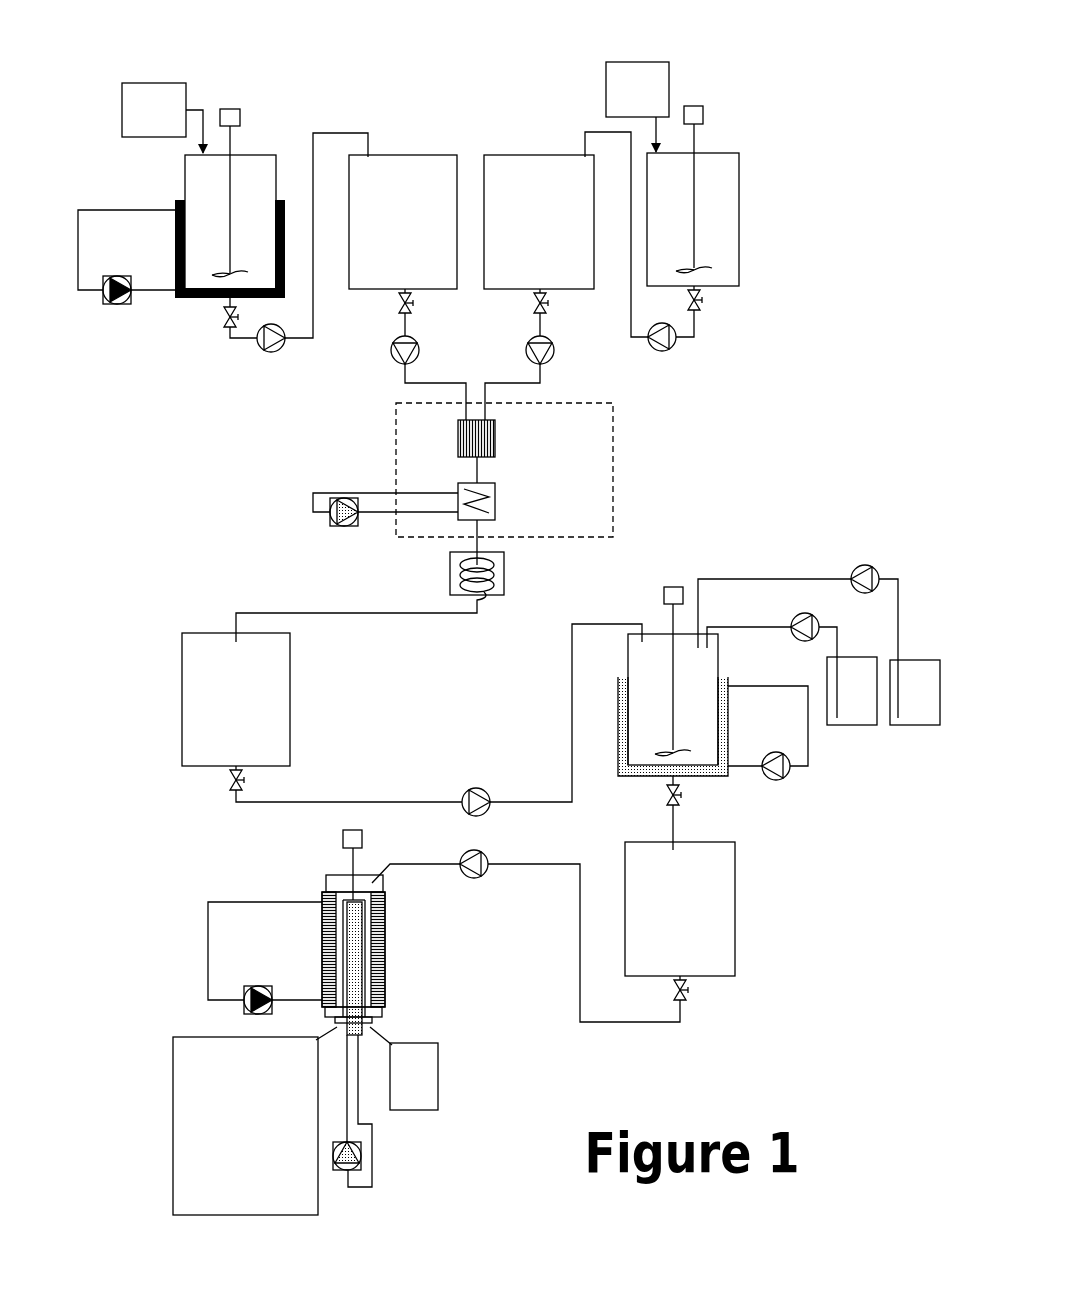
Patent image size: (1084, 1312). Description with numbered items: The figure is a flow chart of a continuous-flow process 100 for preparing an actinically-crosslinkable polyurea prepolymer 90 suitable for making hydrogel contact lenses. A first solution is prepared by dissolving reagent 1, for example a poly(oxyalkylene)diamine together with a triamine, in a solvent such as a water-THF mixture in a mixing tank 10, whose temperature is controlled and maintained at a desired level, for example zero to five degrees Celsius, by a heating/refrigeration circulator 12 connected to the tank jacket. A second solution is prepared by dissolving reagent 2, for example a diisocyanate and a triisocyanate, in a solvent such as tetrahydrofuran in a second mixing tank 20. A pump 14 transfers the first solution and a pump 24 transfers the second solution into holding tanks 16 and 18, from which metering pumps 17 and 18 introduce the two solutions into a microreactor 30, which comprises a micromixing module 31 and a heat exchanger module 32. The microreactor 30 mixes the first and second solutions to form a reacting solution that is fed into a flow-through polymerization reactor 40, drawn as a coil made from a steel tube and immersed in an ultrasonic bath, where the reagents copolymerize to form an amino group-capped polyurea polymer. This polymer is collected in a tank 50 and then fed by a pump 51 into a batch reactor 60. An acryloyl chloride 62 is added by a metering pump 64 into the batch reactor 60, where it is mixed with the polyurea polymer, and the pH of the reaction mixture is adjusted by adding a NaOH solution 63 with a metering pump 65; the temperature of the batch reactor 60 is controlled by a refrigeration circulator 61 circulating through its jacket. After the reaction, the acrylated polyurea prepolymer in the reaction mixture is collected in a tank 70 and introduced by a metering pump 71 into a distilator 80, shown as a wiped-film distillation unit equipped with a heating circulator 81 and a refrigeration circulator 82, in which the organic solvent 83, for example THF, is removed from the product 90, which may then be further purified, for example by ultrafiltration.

The reagent 1 is at (162, 118).
The reagent 2 is at (637, 107).
The mixing tank 10 is at (213, 203).
The heating/refrigeration circulator 12 is at (126, 277).
The transfer pump 14 is at (310, 260).
The holding tank 16 is at (403, 245).
The metering pump 17 is at (428, 377).
The holding tank and metering pump 18 is at (539, 287).
The mixing tank 20 is at (729, 188).
The transfer pump 24 is at (634, 259).
The microreactor 30 is at (591, 457).
The micromixing module 31 is at (458, 445).
The heat exchanger module 32 is at (495, 502).
The flow-through polymerization reactor 40 is at (505, 570).
The tank 50 is at (236, 711).
The transfer pump 51 is at (439, 720).
The batch reactor 60 is at (673, 696).
The refrigeration circulator 61 is at (768, 750).
The acryloyl chloride 62 is at (852, 691).
The NaOH solution 63 is at (915, 692).
The metering pump 64 is at (772, 650).
The metering pump 65 is at (798, 626).
The tank 70 is at (680, 902).
The metering pump 71 is at (526, 936).
The distilator 80 is at (321, 891).
The heating circulator 81 is at (265, 958).
The refrigeration circulator 82 is at (373, 1117).
The organic solvent 83 is at (404, 1068).
The actinically-crosslinkable polyurea prepolymer 90 is at (255, 1121).
The continuous-flow process 100 is at (777, 108).